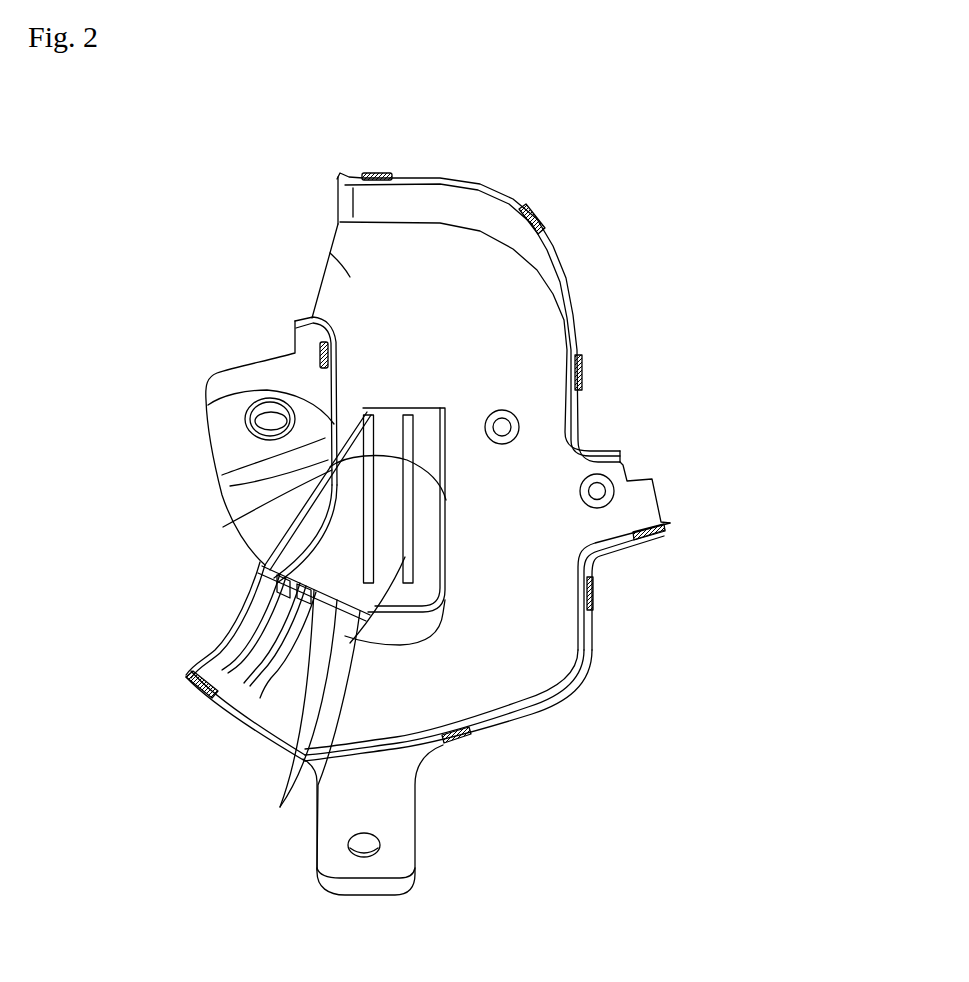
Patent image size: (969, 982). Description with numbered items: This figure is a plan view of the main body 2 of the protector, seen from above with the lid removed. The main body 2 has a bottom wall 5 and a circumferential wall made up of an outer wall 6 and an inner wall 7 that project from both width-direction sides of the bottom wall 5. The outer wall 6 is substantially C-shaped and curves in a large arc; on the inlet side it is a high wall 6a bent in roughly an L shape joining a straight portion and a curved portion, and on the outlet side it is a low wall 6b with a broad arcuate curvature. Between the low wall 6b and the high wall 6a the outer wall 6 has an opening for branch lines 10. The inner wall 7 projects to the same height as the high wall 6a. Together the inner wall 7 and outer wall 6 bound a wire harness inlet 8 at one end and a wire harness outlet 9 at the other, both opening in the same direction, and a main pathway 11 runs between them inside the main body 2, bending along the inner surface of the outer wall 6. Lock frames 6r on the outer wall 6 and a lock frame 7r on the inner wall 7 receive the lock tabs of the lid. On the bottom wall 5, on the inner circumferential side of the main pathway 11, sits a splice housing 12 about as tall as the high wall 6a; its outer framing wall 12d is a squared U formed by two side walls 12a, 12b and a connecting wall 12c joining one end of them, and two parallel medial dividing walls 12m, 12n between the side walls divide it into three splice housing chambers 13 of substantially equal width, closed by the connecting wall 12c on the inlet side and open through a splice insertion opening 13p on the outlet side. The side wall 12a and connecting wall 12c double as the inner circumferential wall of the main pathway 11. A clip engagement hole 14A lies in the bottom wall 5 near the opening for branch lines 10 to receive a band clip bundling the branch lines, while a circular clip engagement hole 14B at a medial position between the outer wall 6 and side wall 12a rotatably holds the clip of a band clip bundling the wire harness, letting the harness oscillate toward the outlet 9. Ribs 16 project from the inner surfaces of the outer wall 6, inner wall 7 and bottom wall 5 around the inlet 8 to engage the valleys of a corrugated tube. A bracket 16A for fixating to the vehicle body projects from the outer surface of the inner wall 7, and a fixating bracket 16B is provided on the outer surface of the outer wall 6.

The main body 2 is at (632, 258).
The bottom wall 5 is at (352, 278).
The outer wall 6 is at (513, 467).
The high wall 6a is at (586, 623).
The low wall 6b is at (566, 312).
The lock frame 6r is at (377, 173).
The inner wall 7 is at (206, 407).
The lock frame 7r is at (322, 357).
The wire harness inlet 8 is at (223, 627).
The wire harness outlet 9 is at (320, 273).
The opening for branch lines 10 is at (647, 510).
The main pathway 11 is at (513, 472).
The splice housing 12 is at (445, 393).
The side wall 12a is at (450, 500).
The side wall 12b is at (383, 613).
The connecting wall 12c is at (337, 487).
The outer framing wall 12d is at (668, 716).
The medial dividing wall 12m is at (223, 527).
The medial dividing wall 12n is at (230, 486).
The splice housing chambers 13 is at (311, 730).
The splice insertion opening 13p is at (383, 407).
The clip engagement hole 14A is at (610, 497).
The clip engagement hole 14B is at (517, 417).
The ribs 16 is at (265, 575).
The bracket 16A is at (223, 437).
The fixating bracket 16B is at (390, 863).